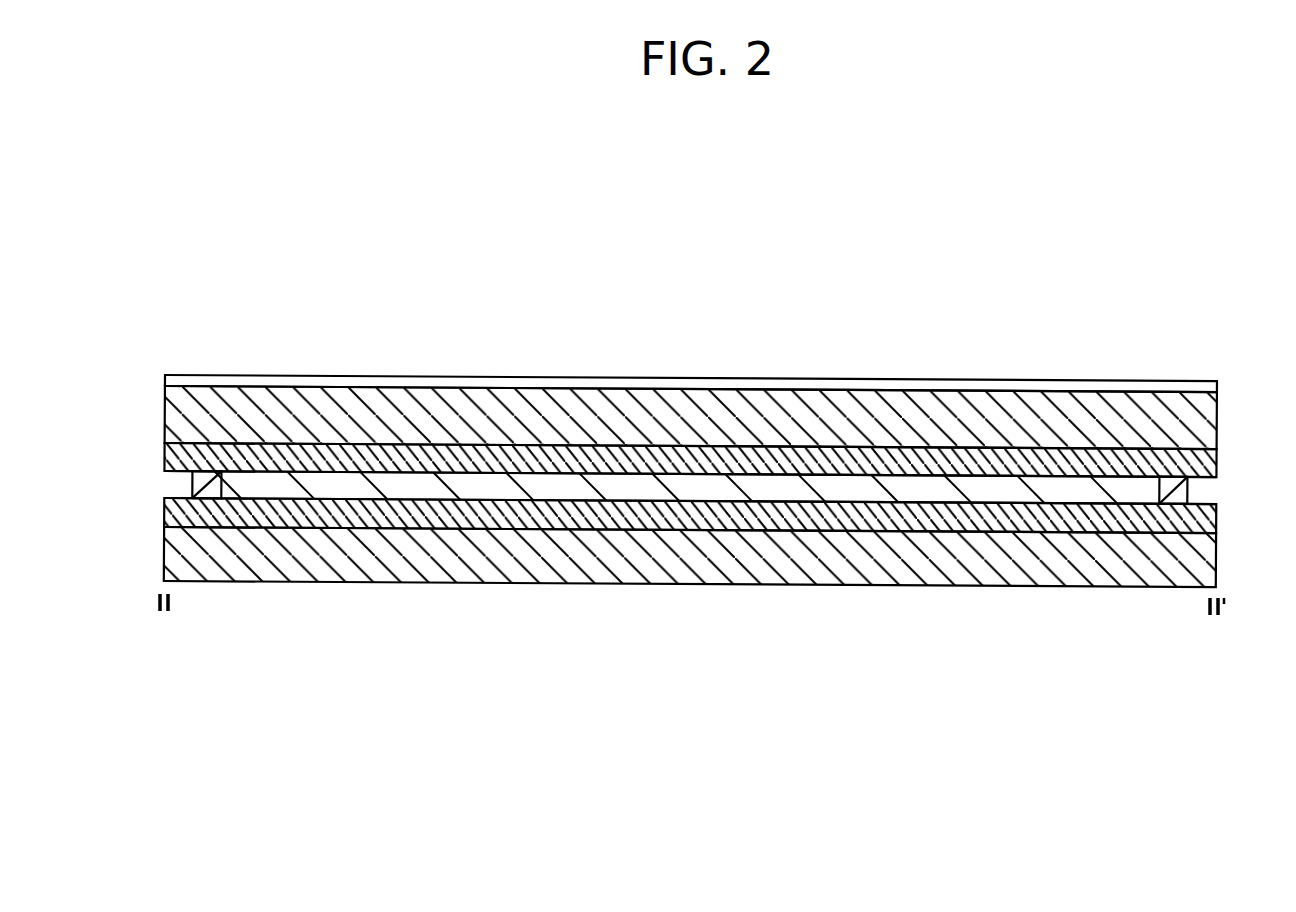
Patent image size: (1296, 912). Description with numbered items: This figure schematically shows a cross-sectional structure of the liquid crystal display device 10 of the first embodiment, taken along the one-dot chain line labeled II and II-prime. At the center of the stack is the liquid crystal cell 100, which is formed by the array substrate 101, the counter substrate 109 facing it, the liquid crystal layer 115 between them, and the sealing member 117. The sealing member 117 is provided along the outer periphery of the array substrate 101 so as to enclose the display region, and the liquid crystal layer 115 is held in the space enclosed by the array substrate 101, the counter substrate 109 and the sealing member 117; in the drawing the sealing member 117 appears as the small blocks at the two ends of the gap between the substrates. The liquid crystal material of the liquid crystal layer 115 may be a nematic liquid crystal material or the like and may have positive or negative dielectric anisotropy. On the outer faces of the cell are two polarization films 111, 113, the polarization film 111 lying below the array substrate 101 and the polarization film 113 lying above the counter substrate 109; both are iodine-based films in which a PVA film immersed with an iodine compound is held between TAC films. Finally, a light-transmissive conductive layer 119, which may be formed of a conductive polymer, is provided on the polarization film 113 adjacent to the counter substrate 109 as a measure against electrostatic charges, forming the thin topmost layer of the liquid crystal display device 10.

The liquid crystal display device 10 is at (687, 465).
The liquid crystal cell 100 is at (686, 534).
The array substrate 101 is at (165, 511).
The counter substrate 109 is at (165, 453).
The polarization film 111 is at (1217, 567).
The polarization film 113 is at (1214, 413).
The liquid crystal layer 115 is at (1040, 490).
The sealing member 117 is at (193, 486).
The light-transmissive conductive layer 119 is at (941, 382).